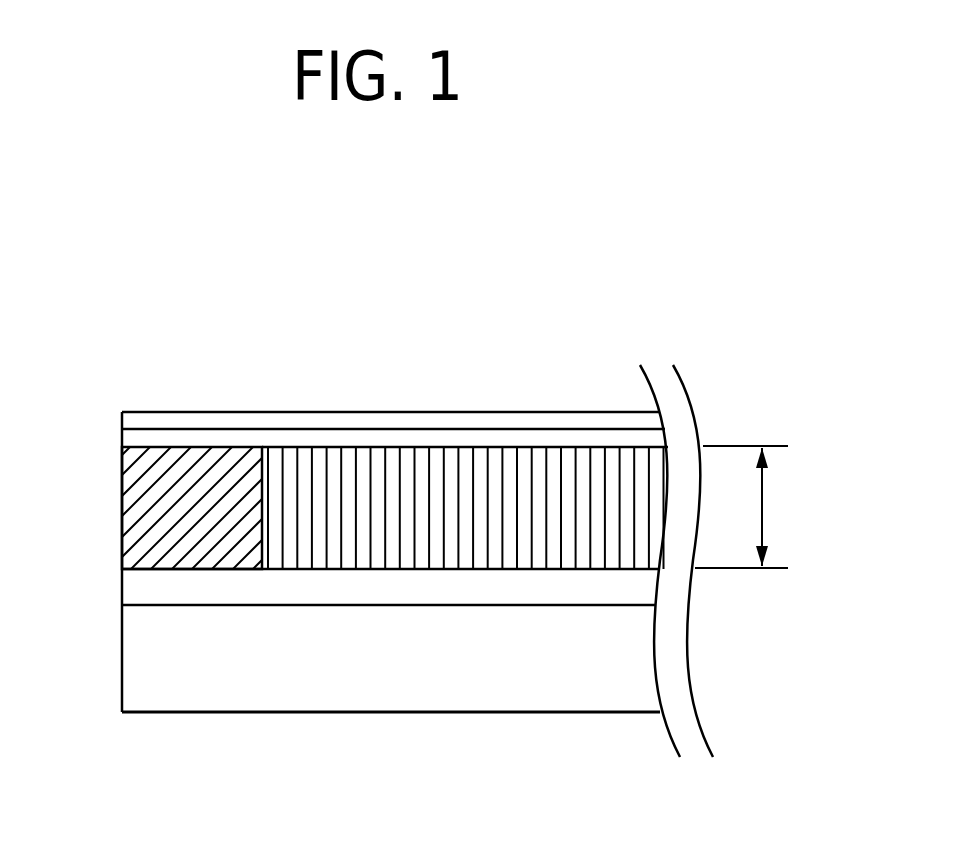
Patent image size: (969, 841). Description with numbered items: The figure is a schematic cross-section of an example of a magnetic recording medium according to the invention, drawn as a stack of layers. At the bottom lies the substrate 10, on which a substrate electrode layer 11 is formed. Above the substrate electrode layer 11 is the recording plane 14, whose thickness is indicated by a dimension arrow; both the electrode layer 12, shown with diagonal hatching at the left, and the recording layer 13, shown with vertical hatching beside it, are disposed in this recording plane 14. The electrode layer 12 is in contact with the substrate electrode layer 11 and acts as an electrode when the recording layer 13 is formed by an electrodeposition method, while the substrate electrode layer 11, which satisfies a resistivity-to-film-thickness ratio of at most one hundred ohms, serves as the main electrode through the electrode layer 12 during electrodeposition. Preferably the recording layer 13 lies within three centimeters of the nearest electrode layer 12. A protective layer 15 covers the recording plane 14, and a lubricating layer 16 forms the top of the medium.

The substrate 10 is at (131, 663).
The substrate electrode layer 11 is at (131, 588).
The electrode layer 12 is at (131, 520).
The recording layer 13 is at (463, 473).
The recording plane 14 is at (764, 510).
The protective layer 15 is at (131, 438).
The lubricating layer 16 is at (256, 412).